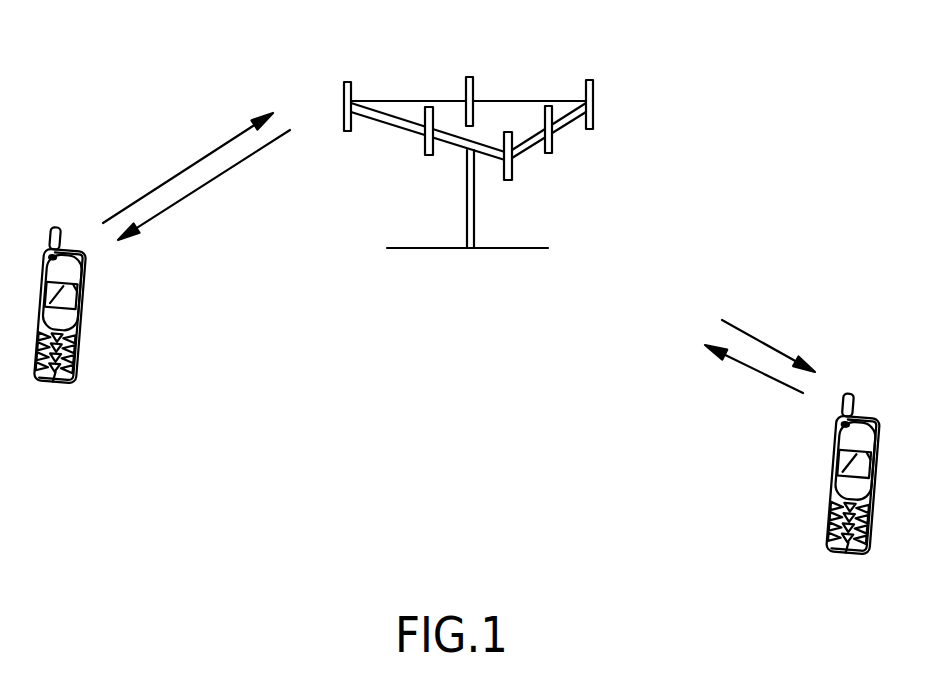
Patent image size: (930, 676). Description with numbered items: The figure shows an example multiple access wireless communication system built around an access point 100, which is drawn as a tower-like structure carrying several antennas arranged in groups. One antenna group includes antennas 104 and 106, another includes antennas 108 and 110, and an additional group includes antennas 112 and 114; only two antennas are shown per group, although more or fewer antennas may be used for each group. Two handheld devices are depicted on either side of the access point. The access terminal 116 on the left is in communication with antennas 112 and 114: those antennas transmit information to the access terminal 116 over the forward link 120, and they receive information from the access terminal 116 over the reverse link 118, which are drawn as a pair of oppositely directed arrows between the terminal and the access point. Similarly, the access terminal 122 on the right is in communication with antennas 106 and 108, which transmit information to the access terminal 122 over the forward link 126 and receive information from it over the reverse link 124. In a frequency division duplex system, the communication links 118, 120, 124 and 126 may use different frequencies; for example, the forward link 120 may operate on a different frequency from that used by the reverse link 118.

The access point 100 is at (445, 248).
The antenna 104 is at (510, 180).
The antenna 106 is at (549, 153).
The antenna 108 is at (593, 110).
The antenna 110 is at (473, 78).
The antenna 112 is at (351, 92).
The antenna 114 is at (428, 155).
The access terminal 116 is at (63, 244).
The reverse link 118 is at (192, 168).
The forward link 120 is at (210, 180).
The access terminal 122 is at (853, 416).
The reverse link 124 is at (752, 370).
The forward link 126 is at (772, 347).